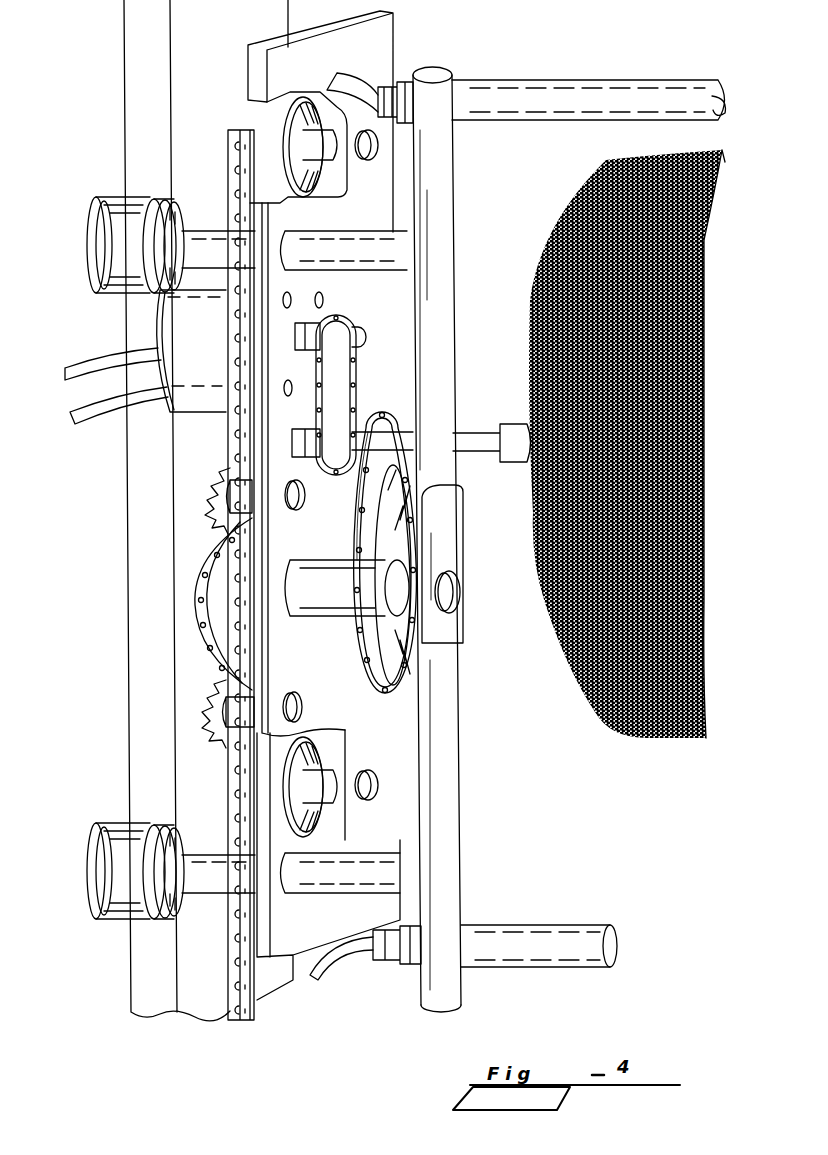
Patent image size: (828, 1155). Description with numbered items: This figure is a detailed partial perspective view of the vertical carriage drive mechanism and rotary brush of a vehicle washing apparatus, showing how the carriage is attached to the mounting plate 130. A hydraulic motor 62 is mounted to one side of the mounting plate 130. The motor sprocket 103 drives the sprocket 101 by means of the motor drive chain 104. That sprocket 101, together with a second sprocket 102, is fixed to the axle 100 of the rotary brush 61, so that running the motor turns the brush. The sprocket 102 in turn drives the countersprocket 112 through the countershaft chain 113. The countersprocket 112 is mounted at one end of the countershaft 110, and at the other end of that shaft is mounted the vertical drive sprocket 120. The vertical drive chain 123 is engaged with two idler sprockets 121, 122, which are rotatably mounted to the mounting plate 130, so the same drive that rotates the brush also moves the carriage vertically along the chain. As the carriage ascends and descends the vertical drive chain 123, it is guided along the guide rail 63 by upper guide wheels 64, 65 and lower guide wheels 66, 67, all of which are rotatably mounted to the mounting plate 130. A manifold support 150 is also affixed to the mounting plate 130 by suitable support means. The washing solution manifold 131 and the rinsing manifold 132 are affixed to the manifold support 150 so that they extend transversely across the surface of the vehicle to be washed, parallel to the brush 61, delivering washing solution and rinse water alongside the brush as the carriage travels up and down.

The rotary brush 61 is at (636, 738).
The hydraulic motor 62 is at (175, 330).
The guide rail 63 is at (142, 744).
The upper guide wheel 64 is at (105, 205).
The upper guide wheel 65 is at (285, 148).
The lower guide wheel 66 is at (108, 922).
The lower guide wheel 67 is at (295, 780).
The axle 100 is at (486, 440).
The sprocket 101 is at (346, 476).
The sprocket 102 is at (392, 420).
The motor sprocket 103 is at (344, 318).
The motor drive chain 104 is at (322, 405).
The countershaft 110 is at (320, 603).
The countersprocket 112 is at (380, 640).
The countershaft chain 113 is at (352, 548).
The vertical drive sprocket 120 is at (220, 630).
The idler sprocket 121 is at (208, 497).
The idler sprocket 122 is at (225, 735).
The vertical drive chain 123 is at (227, 437).
The mounting plate 130 is at (377, 50).
The washing solution manifold 131 is at (597, 95).
The rinsing manifold 132 is at (545, 935).
The manifold support 150 is at (445, 830).